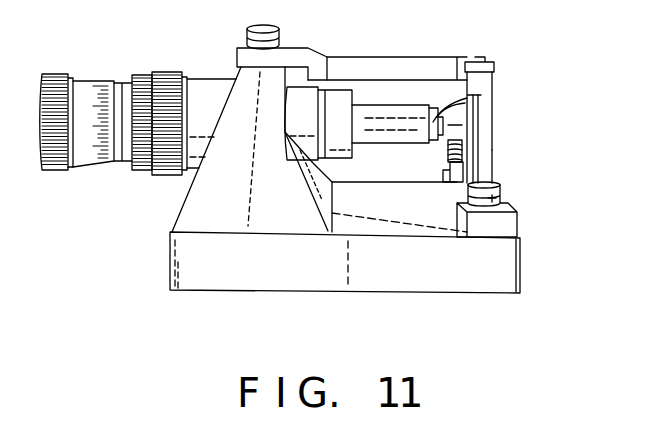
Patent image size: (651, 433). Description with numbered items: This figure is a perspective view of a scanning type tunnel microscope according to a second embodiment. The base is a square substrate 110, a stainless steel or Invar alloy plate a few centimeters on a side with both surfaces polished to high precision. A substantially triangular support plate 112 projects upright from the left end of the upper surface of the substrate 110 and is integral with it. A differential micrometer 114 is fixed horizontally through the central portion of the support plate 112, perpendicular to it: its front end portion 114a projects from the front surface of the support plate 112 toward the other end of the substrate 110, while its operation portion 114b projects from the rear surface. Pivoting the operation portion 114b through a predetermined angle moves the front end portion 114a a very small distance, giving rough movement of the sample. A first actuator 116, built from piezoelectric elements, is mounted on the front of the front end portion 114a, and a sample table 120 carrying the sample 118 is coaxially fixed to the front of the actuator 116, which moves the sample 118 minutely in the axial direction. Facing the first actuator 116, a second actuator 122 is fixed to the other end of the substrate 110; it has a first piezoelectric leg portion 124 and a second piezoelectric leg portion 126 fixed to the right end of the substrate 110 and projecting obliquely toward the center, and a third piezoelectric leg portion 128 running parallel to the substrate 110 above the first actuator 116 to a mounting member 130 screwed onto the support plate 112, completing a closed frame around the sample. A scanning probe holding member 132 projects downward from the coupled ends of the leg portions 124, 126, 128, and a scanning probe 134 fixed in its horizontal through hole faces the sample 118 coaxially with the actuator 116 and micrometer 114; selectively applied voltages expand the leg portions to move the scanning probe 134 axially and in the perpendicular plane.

The substrate 110 is at (308, 292).
The support plate 112 is at (182, 212).
The differential micrometer 114 is at (198, 80).
The front end portion 114a is at (340, 97).
The operation portion 114b is at (85, 80).
The first actuator 116 is at (384, 128).
The sample 118 is at (462, 100).
The sample table 120 is at (446, 68).
The second actuator 122 is at (498, 167).
The first piezoelectric leg portion 124 is at (500, 178).
The second piezoelectric leg portion 126 is at (465, 191).
The third piezoelectric leg portion 128 is at (452, 63).
The mounting member 130 is at (302, 57).
The scanning probe holding member 132 is at (480, 143).
The scanning probe 134 is at (486, 124).